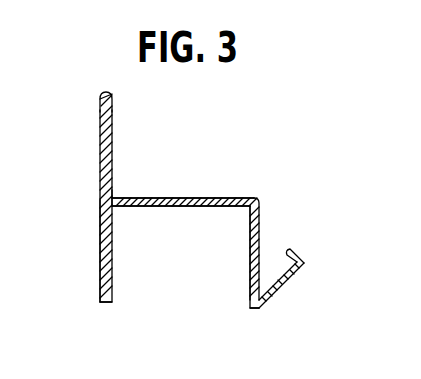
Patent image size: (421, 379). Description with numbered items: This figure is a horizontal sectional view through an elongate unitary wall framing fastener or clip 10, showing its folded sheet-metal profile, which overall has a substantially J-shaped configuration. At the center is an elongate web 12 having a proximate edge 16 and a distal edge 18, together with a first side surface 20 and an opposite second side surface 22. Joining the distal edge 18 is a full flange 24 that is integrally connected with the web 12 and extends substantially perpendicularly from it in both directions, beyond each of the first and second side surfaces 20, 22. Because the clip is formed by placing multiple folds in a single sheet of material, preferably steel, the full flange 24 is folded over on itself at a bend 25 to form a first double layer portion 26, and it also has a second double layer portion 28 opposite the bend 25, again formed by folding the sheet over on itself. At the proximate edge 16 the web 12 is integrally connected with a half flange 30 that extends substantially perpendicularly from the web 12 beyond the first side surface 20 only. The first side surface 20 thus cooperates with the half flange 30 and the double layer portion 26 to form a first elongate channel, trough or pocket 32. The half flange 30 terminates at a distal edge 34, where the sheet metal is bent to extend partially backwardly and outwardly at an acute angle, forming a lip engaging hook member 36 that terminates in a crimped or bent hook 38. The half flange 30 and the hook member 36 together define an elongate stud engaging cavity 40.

The wall framing fastener or clip 10 is at (266, 144).
The web 12 is at (190, 198).
The proximate edge 16 is at (256, 197).
The distal edge 18 is at (112, 197).
The first side surface 20 is at (158, 208).
The second side surface 22 is at (219, 198).
The full flange 24 is at (92, 183).
The bend 25 is at (100, 297).
The first double layer portion 26 is at (100, 244).
The second double layer portion 28 is at (100, 97).
The half flange 30 is at (259, 236).
The first elongate channel, trough or pocket 32 is at (194, 280).
The distal edge of half flange 34 is at (257, 308).
The hook member 36 is at (288, 278).
The hook 38 is at (292, 252).
The stud engaging cavity 40 is at (272, 263).